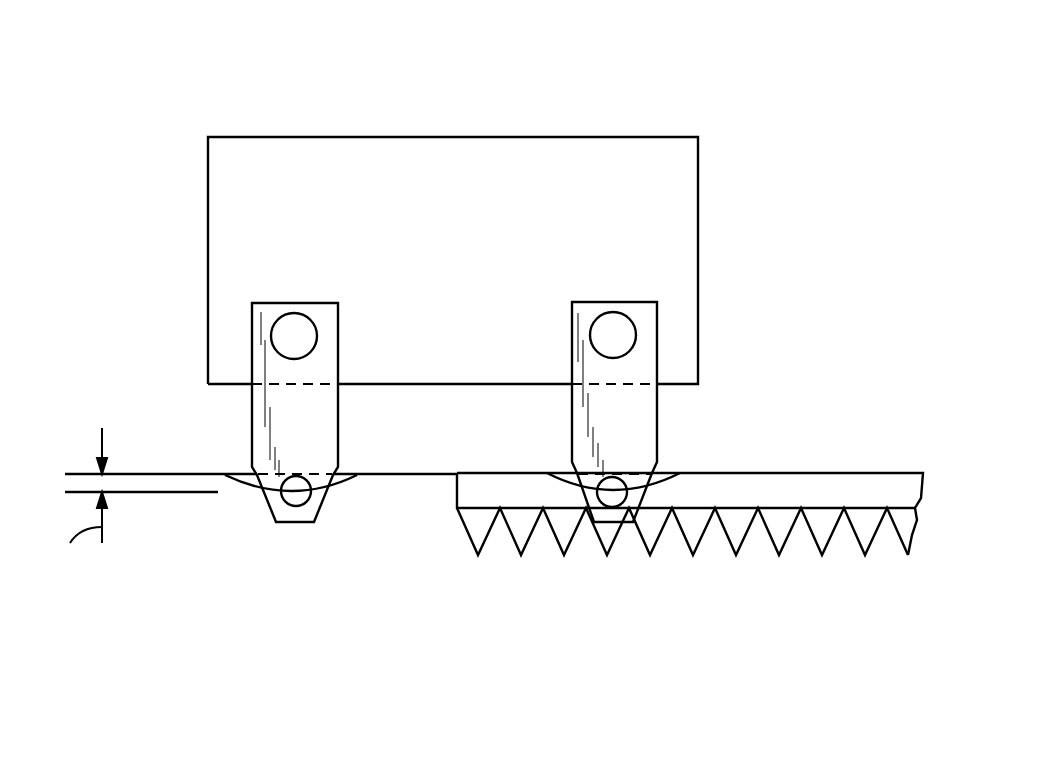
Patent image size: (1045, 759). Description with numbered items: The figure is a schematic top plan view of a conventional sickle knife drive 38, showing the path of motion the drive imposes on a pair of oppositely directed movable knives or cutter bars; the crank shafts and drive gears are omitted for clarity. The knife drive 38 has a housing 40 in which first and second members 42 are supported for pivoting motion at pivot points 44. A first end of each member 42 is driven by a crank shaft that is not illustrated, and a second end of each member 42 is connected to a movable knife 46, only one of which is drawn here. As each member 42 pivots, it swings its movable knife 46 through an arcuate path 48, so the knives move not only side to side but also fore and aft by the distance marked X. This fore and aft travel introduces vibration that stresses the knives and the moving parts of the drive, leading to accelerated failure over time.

The sickle knife drive 38 is at (135, 158).
The housing 40 is at (658, 137).
The member 42 is at (337, 322).
The pivot point 44 is at (271, 333).
The movable knife 46 is at (740, 490).
The arcuate path 48 is at (347, 482).